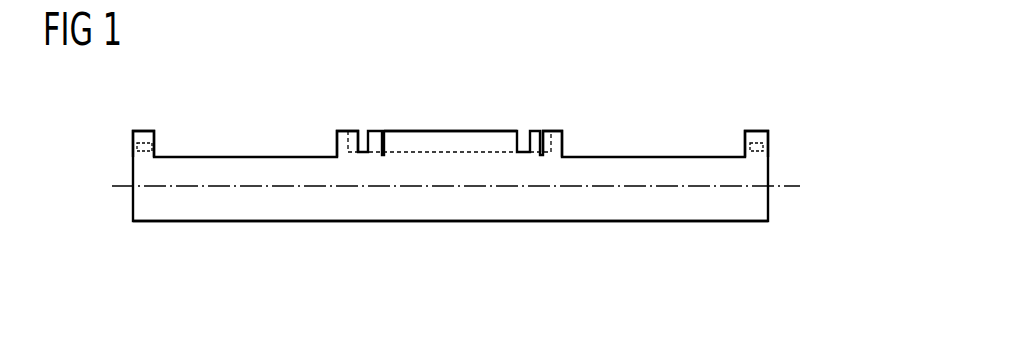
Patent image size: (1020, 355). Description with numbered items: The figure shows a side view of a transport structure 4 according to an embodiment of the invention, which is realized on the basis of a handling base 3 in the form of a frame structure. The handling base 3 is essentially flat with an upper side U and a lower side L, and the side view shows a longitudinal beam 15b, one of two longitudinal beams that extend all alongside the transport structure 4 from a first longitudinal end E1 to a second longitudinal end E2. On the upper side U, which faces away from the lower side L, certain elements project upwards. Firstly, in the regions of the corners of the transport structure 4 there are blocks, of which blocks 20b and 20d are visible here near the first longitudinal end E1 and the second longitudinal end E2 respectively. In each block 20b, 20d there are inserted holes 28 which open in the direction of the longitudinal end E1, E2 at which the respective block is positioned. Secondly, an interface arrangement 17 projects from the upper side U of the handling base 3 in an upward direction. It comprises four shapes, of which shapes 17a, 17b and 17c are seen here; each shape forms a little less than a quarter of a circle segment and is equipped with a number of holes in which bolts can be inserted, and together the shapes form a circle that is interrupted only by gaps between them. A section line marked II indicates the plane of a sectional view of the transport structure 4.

The handling base 3 is at (719, 81).
The transport structure 4 is at (704, 117).
The longitudinal beam 15b is at (428, 208).
The interface arrangement 17 is at (492, 108).
The shape 17a is at (337, 143).
The shape 17b is at (562, 143).
The shape 17c is at (453, 142).
The block 20b is at (762, 131).
The block 20d is at (143, 132).
The holes 28 is at (153, 148).
The first longitudinal end E1 is at (814, 145).
The second longitudinal end E2 is at (100, 136).
The upper side U is at (654, 127).
The lower side L is at (619, 241).
The section line II is at (460, 187).